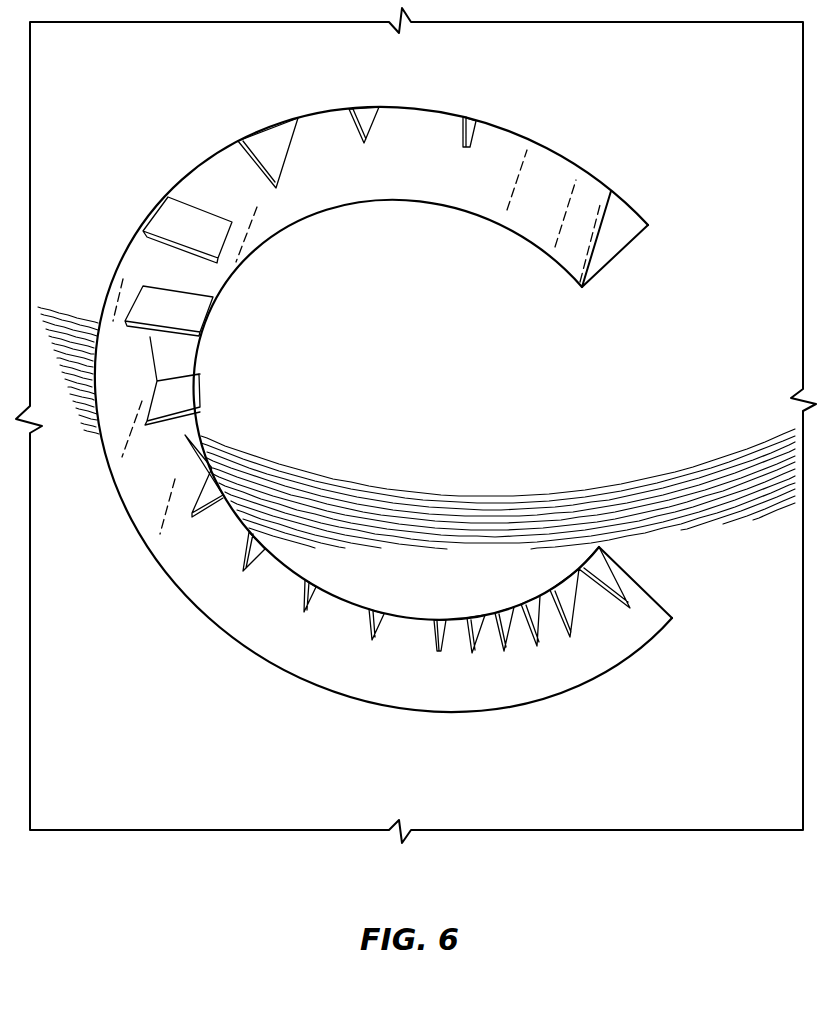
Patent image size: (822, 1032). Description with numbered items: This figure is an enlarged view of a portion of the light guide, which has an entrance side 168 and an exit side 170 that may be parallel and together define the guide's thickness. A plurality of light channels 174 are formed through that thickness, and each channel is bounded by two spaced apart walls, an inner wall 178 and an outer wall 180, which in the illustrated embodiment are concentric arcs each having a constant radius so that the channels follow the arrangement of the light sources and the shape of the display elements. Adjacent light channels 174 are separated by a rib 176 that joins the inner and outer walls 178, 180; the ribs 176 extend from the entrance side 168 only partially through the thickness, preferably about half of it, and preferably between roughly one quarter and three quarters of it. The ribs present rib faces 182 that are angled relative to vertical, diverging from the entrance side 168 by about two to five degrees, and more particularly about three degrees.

The entrance side 168 is at (147, 257).
The exit side 170 is at (617, 424).
The light channels 174 is at (213, 175).
The rib 176 is at (287, 135).
The inner wall 178 is at (467, 210).
The outer wall 180 is at (468, 681).
The rib faces 182 is at (177, 401).